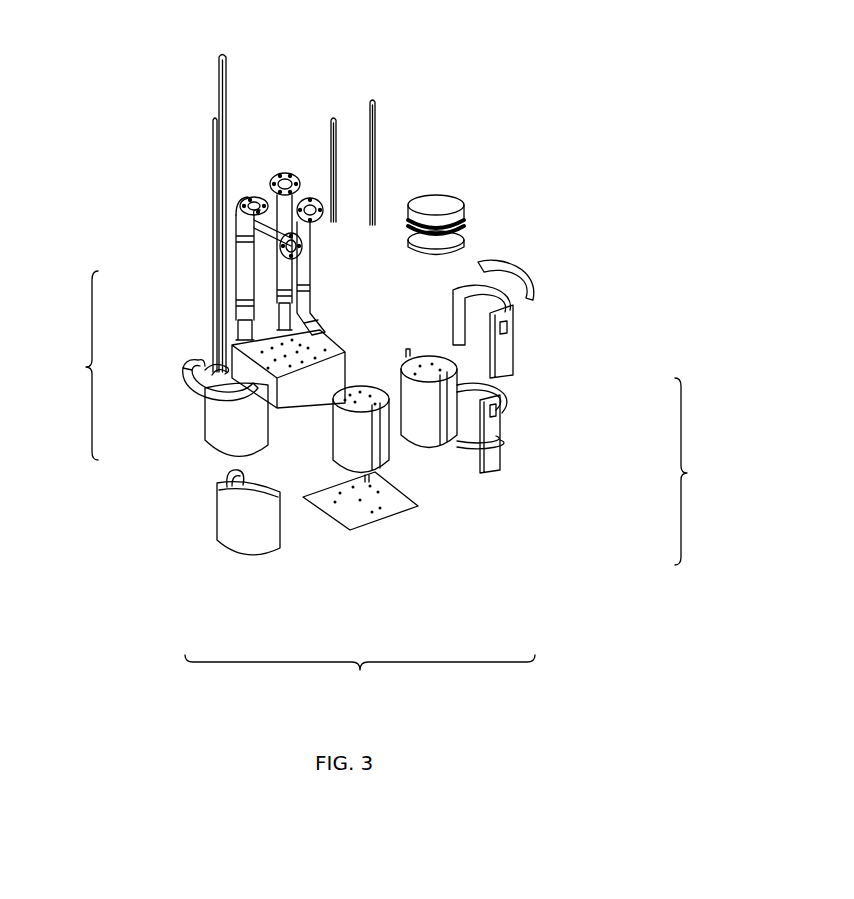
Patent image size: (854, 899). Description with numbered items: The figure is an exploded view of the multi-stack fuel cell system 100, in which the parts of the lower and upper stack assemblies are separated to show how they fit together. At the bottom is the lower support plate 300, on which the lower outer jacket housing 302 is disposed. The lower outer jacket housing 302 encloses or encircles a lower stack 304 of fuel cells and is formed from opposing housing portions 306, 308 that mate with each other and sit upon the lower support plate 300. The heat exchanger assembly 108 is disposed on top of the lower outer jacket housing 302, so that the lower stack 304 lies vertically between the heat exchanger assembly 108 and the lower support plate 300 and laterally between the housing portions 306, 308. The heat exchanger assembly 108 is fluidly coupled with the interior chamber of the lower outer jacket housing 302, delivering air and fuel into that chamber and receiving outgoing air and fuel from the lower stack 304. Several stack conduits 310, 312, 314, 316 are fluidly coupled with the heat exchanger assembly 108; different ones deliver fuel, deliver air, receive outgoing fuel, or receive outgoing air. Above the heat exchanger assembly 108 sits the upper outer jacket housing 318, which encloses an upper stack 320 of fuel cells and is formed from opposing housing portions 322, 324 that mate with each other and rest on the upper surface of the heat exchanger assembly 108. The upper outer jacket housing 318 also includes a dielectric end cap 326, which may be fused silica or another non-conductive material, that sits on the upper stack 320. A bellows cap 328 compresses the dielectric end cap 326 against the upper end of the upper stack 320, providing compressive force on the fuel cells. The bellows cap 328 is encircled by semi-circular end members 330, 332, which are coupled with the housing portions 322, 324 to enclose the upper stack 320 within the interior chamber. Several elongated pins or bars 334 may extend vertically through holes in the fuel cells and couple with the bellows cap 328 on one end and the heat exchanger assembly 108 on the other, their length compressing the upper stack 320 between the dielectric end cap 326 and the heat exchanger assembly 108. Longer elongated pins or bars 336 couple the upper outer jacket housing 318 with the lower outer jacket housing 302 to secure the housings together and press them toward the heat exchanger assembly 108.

The multi-stack fuel cell system 100 is at (360, 679).
The heat exchanger assembly 108 is at (334, 340).
The lower support plate 300 is at (415, 510).
The lower outer jacket housing 302 is at (701, 471).
The lower stack 304 is at (390, 455).
The housing portion 306 is at (252, 542).
The housing portion 308 is at (510, 430).
The stack conduit 310 is at (246, 195).
The stack conduit 312 is at (230, 240).
The stack conduit 314 is at (285, 173).
The stack conduit 316 is at (330, 226).
The upper outer jacket housing 318 is at (68, 365).
The upper stack 320 is at (437, 452).
The housing portion 322 is at (197, 428).
The housing portion 324 is at (515, 338).
The dielectric end cap 326 is at (472, 236).
The bellows cap 328 is at (465, 195).
The semi-circular end member 330 is at (180, 375).
The semi-circular end member 332 is at (545, 268).
The elongated pins or bars 334 is at (378, 88).
The longer elongated pins or bars 336 is at (230, 48).